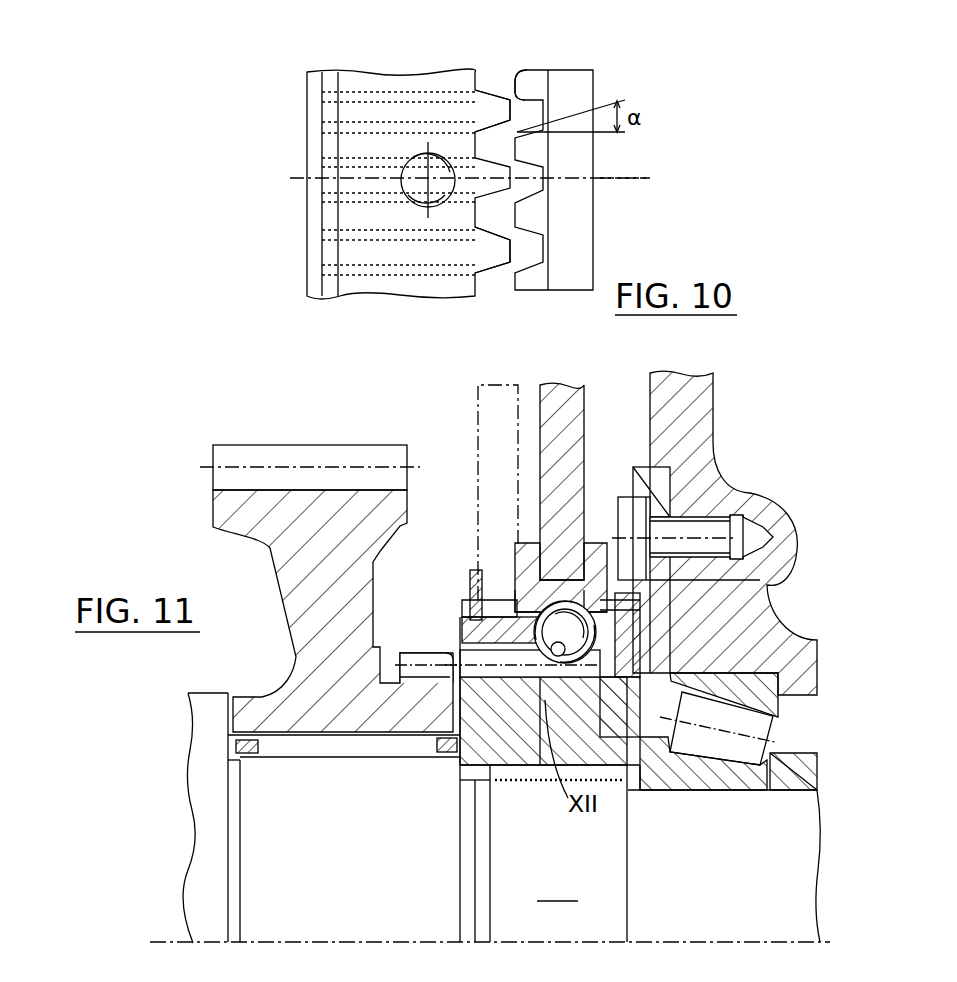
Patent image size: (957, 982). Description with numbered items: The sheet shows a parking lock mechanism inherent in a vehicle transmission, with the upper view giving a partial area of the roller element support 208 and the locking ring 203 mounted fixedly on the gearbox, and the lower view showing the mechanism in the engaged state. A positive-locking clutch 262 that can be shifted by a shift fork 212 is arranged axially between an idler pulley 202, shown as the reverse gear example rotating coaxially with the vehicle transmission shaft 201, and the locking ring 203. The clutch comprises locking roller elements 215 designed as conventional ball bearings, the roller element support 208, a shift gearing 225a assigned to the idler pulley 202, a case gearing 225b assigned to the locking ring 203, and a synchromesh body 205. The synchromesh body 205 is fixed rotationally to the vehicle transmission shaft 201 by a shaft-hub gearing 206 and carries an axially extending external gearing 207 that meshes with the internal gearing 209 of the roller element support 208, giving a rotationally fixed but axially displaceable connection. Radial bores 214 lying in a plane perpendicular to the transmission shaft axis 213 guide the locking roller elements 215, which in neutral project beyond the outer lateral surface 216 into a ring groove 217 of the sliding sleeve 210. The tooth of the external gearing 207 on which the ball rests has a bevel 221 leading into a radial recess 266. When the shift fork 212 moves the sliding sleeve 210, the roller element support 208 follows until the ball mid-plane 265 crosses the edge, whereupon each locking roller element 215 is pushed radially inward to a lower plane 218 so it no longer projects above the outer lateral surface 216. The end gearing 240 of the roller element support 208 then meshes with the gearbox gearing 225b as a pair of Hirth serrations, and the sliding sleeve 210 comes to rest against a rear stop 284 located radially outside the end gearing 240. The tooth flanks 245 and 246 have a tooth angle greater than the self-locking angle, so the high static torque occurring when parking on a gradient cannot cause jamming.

In FIG. 11, the vehicle transmission shaft 201 is at (640, 853).
In FIG. 11, the idler pulley 202 is at (280, 543).
In FIG. 11, the locking ring 203 is at (700, 500).
In FIG. 11, the synchromesh body 205 is at (462, 752).
In FIG. 11, the shaft-hub gearing 206 is at (541, 768).
In FIG. 11, the external gearing 207 is at (462, 622).
In FIG. 10, the roller element support 208 is at (450, 82).
In FIG. 11, the roller element support 208 is at (480, 790).
In FIG. 11, the internal gearing 209 is at (600, 653).
In FIG. 11, the sliding sleeve 210 is at (523, 480).
In FIG. 11, the shift fork 212 is at (563, 423).
In FIG. 10, the transmission shaft axis 213 is at (622, 180).
In FIG. 11, the bores 214 is at (467, 607).
In FIG. 10, the locking roller element 215 is at (418, 162).
In FIG. 11, the locking roller element 215 is at (592, 672).
In FIG. 11, the outer lateral surface 216 is at (482, 557).
In FIG. 11, the ring groove 217 is at (772, 578).
In FIG. 11, the lower plane 218 is at (560, 660).
In FIG. 11, the bevel 221 is at (537, 685).
In FIG. 11, the shift gearing 225a is at (427, 665).
In FIG. 10, the case gearing 225b is at (527, 283).
In FIG. 10, the end gearing 240 is at (502, 253).
In FIG. 10, the tooth flank 245 is at (490, 92).
In FIG. 10, the tooth flank 246 is at (516, 78).
In FIG. 11, the positive-locking clutch 262 is at (495, 476).
In FIG. 11, the ball mid-plane 265 is at (510, 570).
In FIG. 11, the radial recess 266 is at (596, 543).
In FIG. 11, the rear stop 284 is at (663, 605).